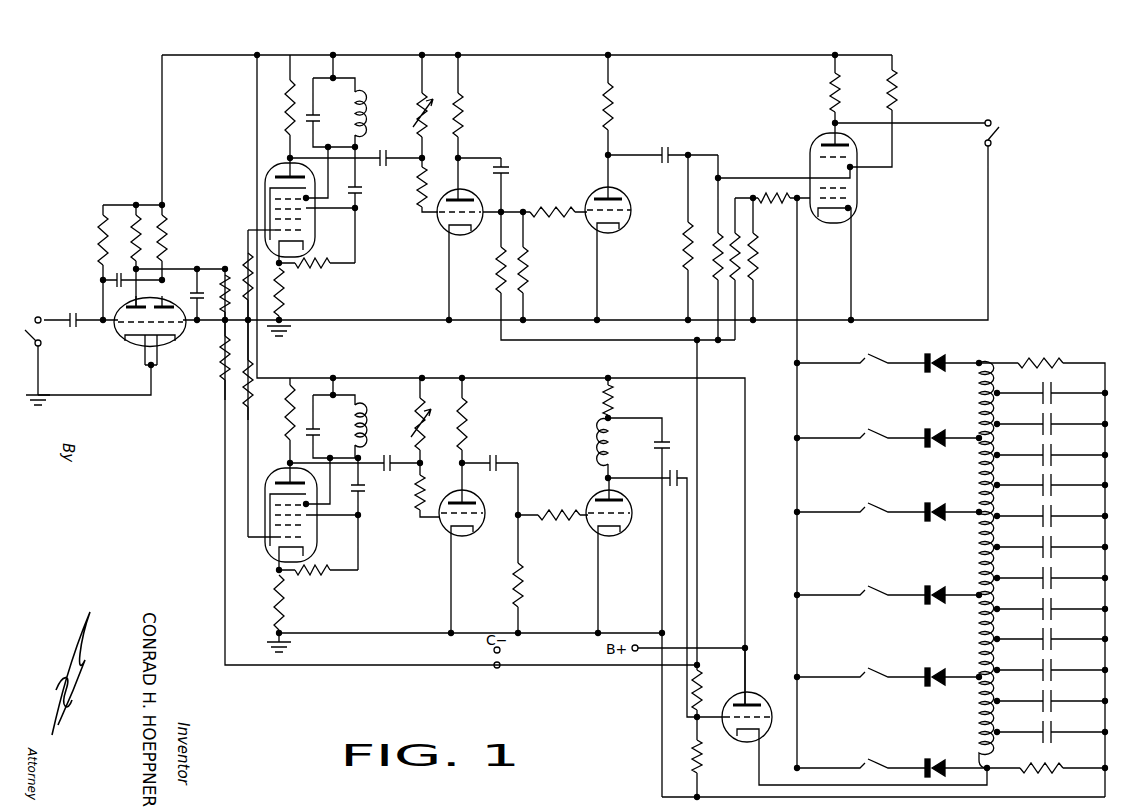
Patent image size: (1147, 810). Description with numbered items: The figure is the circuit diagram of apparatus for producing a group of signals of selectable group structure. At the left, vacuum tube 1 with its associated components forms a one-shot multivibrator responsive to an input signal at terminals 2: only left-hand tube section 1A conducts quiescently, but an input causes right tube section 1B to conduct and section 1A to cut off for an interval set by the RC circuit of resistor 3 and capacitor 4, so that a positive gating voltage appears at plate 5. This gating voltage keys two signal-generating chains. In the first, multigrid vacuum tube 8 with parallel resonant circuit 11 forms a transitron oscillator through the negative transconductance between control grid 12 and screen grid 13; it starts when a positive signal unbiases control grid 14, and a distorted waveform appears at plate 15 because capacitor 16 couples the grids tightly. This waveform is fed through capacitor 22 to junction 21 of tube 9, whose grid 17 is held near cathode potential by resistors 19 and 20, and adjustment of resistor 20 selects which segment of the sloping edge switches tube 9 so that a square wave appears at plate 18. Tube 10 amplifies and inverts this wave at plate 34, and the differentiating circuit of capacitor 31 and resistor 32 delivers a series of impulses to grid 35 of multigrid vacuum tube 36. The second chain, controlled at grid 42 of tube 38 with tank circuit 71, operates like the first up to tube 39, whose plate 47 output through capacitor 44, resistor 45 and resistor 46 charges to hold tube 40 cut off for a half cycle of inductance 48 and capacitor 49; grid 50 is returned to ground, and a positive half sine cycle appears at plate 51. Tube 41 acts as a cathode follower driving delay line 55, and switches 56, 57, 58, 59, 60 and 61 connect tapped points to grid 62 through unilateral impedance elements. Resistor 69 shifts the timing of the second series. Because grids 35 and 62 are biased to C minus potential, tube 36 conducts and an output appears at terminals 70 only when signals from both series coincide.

The vacuum tube 1 is at (123, 347).
The left-hand tube section 1A is at (113, 310).
The right tube section 1B is at (181, 336).
The terminals 2 is at (27, 334).
The resistor 3 is at (101, 239).
The capacitor 4 is at (118, 272).
The plate 5 is at (143, 302).
The multigrid vacuum tube 8 is at (276, 167).
The vacuum tube 9 is at (441, 232).
The vacuum tube 10 is at (625, 228).
The parallel resonant circuit 11 is at (342, 137).
The control grid 12 is at (350, 212).
The screen grid 13 is at (318, 198).
The control grid 14 is at (262, 233).
The plate 15 is at (298, 128).
The capacitor 16 is at (360, 192).
The grid 17 is at (440, 198).
The plate 18 is at (465, 198).
The resistor 19 is at (418, 186).
The variable resistor 20 is at (416, 102).
The junction 21 is at (425, 157).
The capacitor 22 is at (393, 145).
The capacitor 31 is at (664, 148).
The resistor 32 is at (688, 246).
The plate 34 is at (595, 199).
The grid 35 is at (816, 178).
The multigrid vacuum tube 36 is at (813, 142).
The tube 38 is at (278, 475).
The tube 39 is at (443, 535).
The tube 40 is at (624, 533).
The tube 41 is at (760, 703).
The grid 42 is at (259, 540).
The capacitor 44 is at (498, 456).
The resistor 45 is at (552, 512).
The resistor 46 is at (515, 580).
The plate 47 is at (458, 500).
The inductance 48 is at (600, 453).
The capacitor 49 is at (666, 443).
The grid 50 is at (580, 520).
The plate 51 is at (604, 479).
The delay line 55 is at (1134, 575).
The switch 56 is at (870, 763).
The switch 57 is at (870, 672).
The switch 58 is at (870, 590).
The switch 59 is at (870, 507).
The switch 60 is at (870, 433).
The switch 61 is at (870, 358).
The grid 62 is at (806, 205).
The resistor 69 is at (415, 433).
The terminals 70 is at (1001, 133).
The tank circuit 71 is at (342, 442).